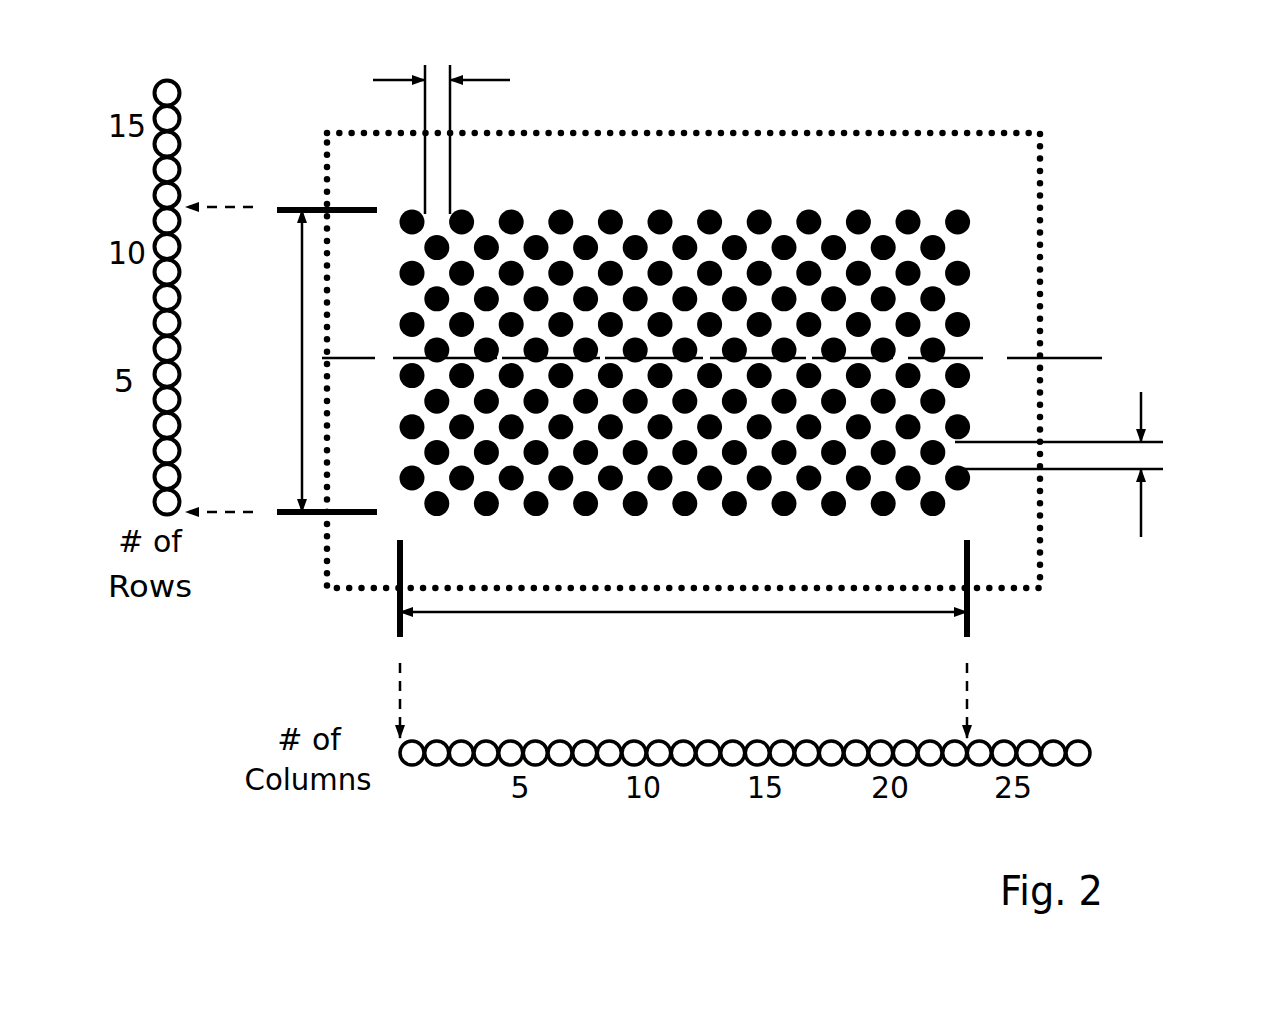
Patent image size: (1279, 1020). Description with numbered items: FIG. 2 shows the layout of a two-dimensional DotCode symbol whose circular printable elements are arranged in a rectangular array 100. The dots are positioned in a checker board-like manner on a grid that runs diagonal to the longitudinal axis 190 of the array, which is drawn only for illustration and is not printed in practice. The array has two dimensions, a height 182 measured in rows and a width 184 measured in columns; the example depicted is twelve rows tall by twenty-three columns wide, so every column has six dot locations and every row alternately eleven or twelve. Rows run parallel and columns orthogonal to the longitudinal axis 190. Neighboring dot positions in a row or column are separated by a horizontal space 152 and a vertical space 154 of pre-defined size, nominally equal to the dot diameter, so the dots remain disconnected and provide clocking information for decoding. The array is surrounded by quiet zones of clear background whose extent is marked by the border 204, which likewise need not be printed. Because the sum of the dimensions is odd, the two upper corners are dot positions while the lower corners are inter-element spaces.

The rectangular array 100 is at (985, 185).
The longitudinal axis 190 is at (1062, 350).
The border 204 is at (705, 133).
The horizontal space 152 is at (441, 113).
The vertical space 154 is at (1091, 464).
The height 182 is at (303, 361).
The width 184 is at (683, 601).